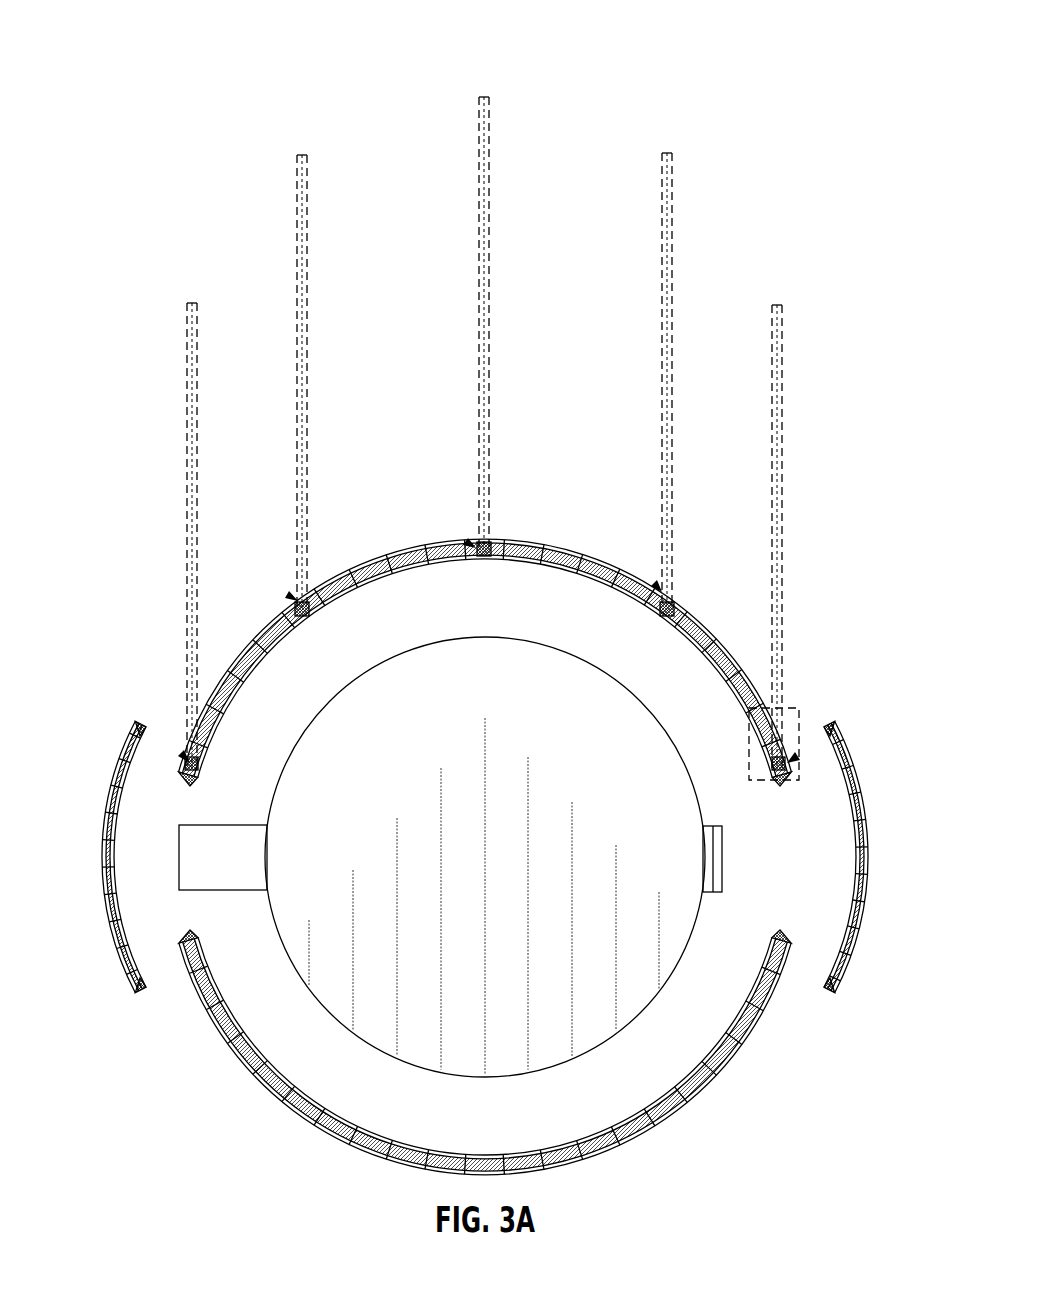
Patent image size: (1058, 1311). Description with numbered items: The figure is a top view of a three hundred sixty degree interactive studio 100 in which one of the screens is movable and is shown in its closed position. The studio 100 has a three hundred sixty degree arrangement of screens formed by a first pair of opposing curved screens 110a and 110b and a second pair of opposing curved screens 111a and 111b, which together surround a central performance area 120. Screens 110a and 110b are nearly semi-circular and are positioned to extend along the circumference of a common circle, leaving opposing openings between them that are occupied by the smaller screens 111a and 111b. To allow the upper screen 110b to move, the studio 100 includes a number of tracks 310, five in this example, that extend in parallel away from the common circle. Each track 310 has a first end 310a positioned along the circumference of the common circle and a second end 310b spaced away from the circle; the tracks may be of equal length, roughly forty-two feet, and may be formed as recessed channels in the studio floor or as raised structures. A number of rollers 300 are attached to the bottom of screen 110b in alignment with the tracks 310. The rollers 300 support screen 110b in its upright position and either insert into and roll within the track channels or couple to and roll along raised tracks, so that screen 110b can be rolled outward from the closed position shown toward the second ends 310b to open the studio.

The 360 degree interactive studio 100 is at (156, 100).
The first curved screen 110a is at (690, 1097).
The second curved screen 110b is at (245, 672).
The third curved screen 111a is at (112, 965).
The fourth curved screen 111b is at (858, 963).
The performance area 120 is at (600, 995).
The roller 300 is at (200, 758).
The track 310 is at (188, 470).
The first end of track 310a is at (182, 754).
The second end of track 310b is at (482, 96).